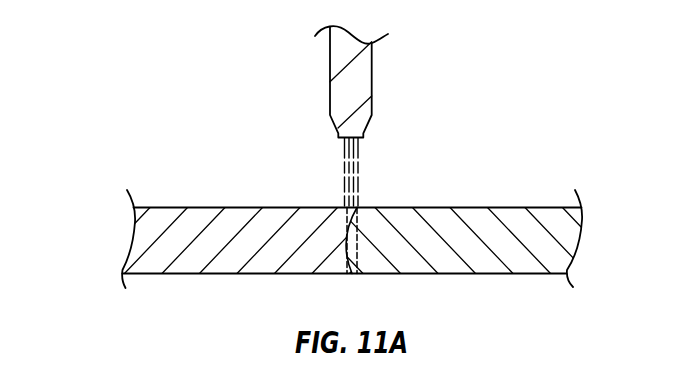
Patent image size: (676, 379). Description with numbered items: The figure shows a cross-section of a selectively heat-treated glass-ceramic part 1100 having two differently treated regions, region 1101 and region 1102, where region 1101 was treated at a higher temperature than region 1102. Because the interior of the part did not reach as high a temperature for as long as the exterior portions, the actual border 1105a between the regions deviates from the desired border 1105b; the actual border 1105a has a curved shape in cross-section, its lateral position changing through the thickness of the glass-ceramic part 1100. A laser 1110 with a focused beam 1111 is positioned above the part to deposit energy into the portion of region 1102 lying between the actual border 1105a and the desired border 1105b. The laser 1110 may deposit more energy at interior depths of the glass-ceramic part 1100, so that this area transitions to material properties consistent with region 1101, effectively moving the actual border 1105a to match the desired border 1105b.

The glass-ceramic part 1100 is at (94, 229).
The region 1101 is at (208, 208).
The region 1102 is at (495, 208).
The actual border 1105a is at (346, 242).
The desired border 1105b is at (359, 267).
The laser 1110 is at (372, 76).
The focused beam 1111 is at (374, 171).